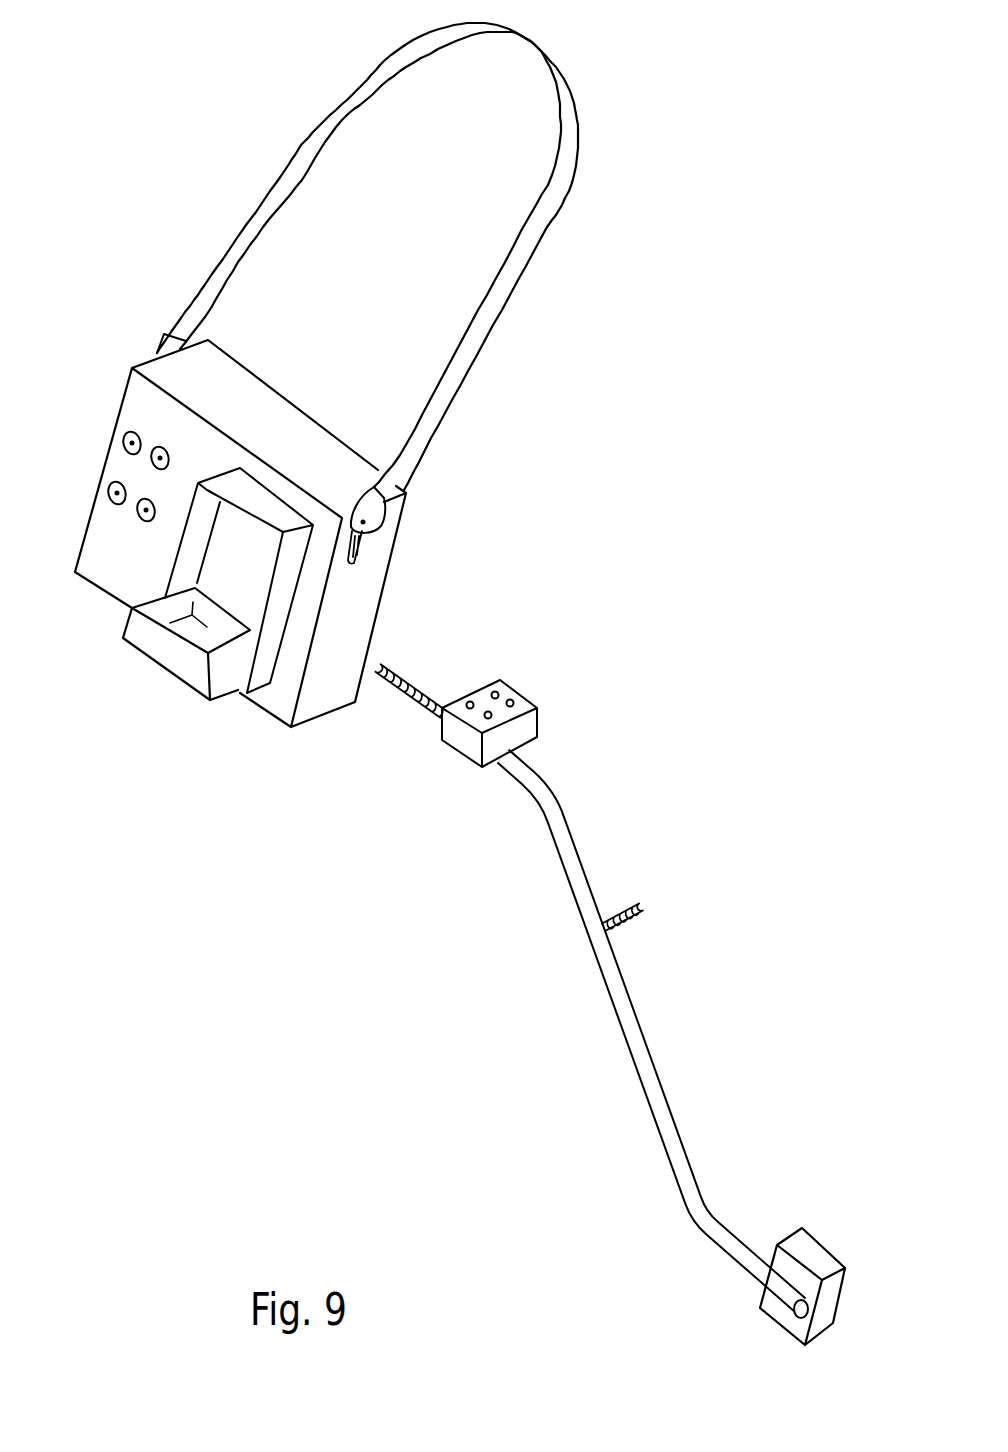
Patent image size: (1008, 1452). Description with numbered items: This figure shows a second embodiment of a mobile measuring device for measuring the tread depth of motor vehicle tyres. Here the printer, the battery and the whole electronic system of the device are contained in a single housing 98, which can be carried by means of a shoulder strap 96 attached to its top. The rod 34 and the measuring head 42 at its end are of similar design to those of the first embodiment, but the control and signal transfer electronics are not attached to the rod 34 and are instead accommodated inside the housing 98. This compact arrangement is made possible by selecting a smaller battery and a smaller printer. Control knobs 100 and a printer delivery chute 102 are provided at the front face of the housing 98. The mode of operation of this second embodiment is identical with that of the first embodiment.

The rod 34 is at (620, 1003).
The measuring head 42 is at (800, 1245).
The shoulder strap 96 is at (506, 276).
The housing 98 is at (120, 568).
The control knobs 100 is at (132, 473).
The printer delivery chute 102 is at (204, 650).